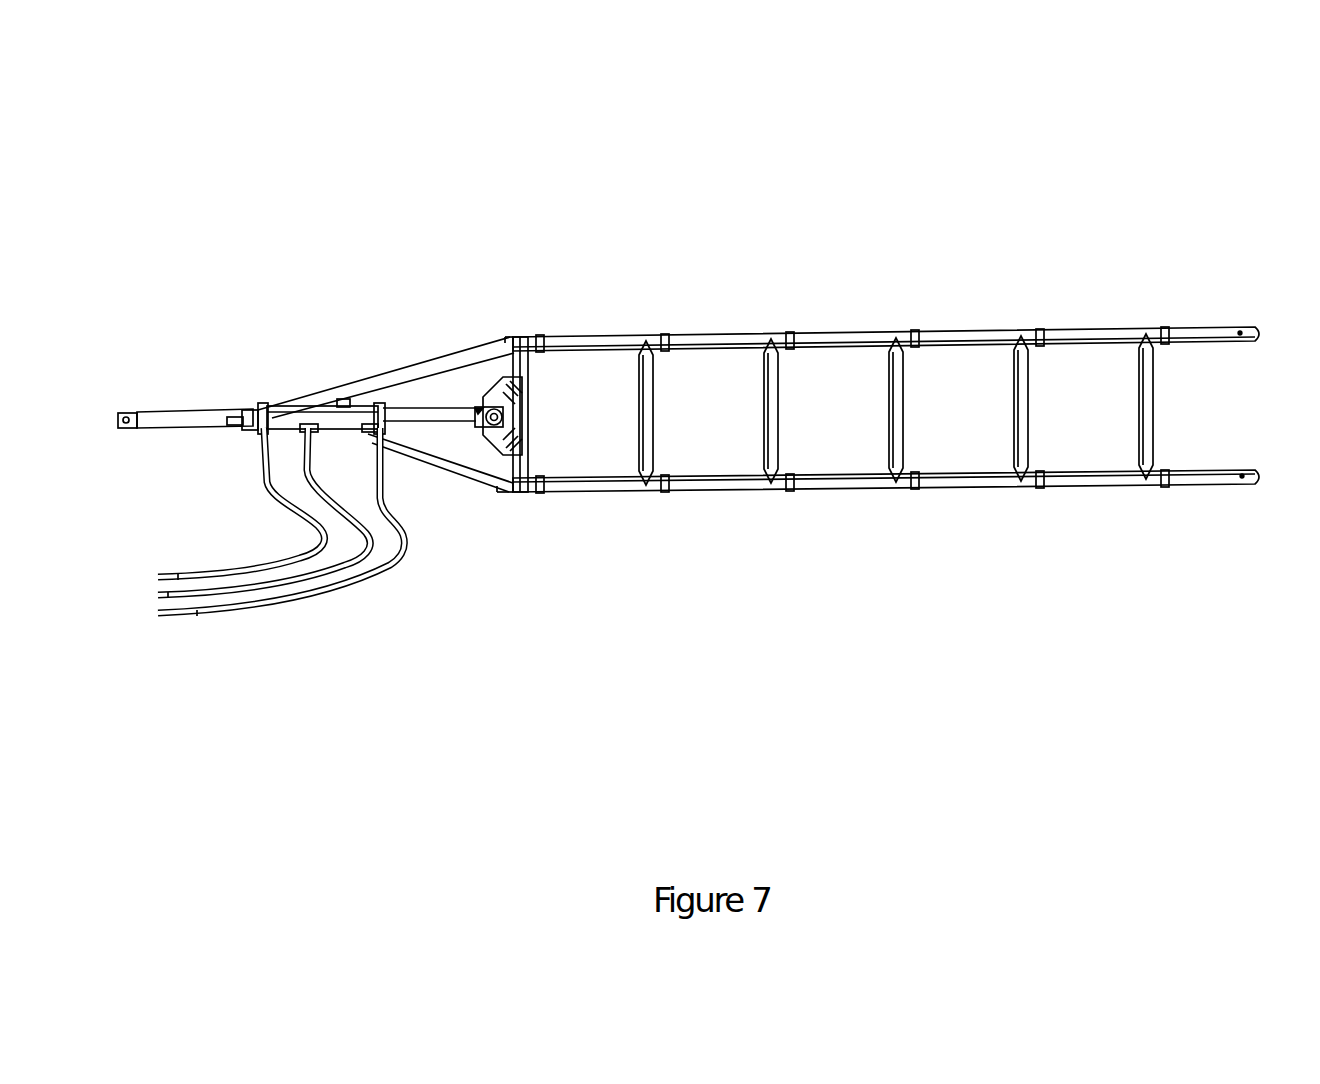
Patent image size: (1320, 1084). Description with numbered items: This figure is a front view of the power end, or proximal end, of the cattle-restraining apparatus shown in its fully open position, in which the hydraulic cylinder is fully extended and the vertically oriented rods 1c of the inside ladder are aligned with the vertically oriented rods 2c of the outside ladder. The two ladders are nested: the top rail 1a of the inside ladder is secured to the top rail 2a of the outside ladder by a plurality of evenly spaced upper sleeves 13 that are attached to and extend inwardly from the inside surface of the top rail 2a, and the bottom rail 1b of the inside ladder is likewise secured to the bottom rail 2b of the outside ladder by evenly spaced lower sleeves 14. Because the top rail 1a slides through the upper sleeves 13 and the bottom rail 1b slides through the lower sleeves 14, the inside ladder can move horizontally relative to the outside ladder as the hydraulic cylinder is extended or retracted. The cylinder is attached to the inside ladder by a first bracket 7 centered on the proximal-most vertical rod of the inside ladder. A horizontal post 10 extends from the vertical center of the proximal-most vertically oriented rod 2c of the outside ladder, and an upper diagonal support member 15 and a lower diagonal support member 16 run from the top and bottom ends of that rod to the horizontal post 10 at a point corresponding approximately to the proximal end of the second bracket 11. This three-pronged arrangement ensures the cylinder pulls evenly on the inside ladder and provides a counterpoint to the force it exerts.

The top rail of the inside ladder 1a is at (600, 343).
The bottom rail of the inside ladder 1b is at (633, 485).
The vertically oriented rods of the inside ladder 1c is at (897, 368).
The top rail of the outside ladder 2a is at (886, 253).
The bottom rail of the outside ladder 2b is at (886, 565).
The vertically oriented rods of the outside ladder 2c is at (906, 310).
The first bracket 7 is at (495, 402).
The horizontal post 10 is at (157, 410).
The second bracket 11 is at (232, 421).
The upper sleeves 13 is at (536, 338).
The lower sleeves 14 is at (543, 485).
The upper diagonal support member 15 is at (405, 380).
The lower diagonal support member 16 is at (432, 462).